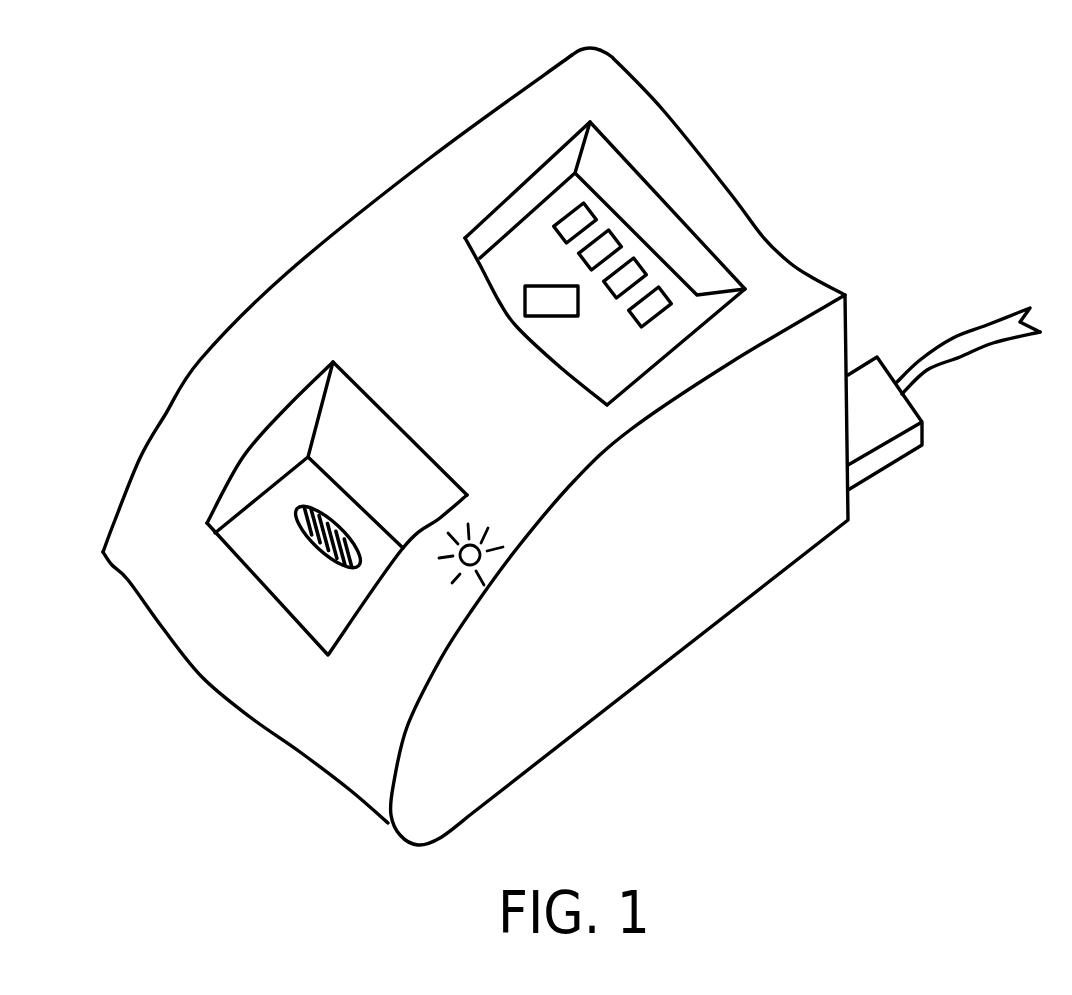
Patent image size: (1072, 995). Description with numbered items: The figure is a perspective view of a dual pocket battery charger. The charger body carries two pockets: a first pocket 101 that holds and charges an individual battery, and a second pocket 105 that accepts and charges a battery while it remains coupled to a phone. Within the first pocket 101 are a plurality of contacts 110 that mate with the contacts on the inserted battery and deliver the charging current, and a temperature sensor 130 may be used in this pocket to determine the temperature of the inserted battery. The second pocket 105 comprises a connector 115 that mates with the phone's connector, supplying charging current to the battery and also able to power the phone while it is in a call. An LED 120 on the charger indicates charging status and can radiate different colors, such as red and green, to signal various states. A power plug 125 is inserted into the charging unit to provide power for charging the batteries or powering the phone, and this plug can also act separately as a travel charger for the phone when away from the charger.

The first pocket 101 is at (555, 167).
The second pocket 105 is at (273, 445).
The contacts 110 is at (612, 283).
The connector 115 is at (297, 527).
The LED 120 is at (485, 556).
The power plug 125 is at (877, 357).
The temperature sensor 130 is at (553, 300).